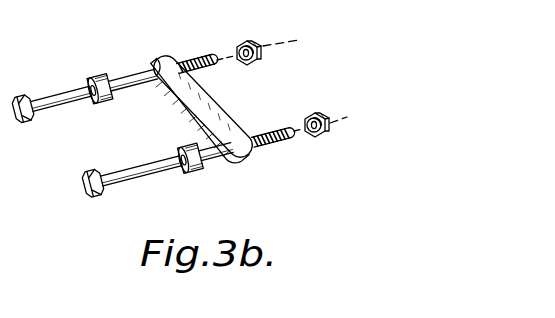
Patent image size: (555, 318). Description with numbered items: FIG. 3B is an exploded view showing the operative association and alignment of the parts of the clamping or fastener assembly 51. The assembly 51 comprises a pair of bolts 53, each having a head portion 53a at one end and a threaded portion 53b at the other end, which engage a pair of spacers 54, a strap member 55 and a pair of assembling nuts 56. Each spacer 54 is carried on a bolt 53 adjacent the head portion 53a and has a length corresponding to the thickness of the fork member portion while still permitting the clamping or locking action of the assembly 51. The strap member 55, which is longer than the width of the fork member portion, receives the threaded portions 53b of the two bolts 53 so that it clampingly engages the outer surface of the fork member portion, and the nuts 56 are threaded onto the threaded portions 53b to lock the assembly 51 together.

The clamping or fastener assembly 51 is at (259, 79).
The bolts 53 is at (58, 94).
The head portions 53a is at (82, 183).
The threaded portions 53b is at (201, 57).
The spacers 54 is at (97, 76).
The strap member 55 is at (223, 110).
The assembling nuts 56 is at (255, 42).